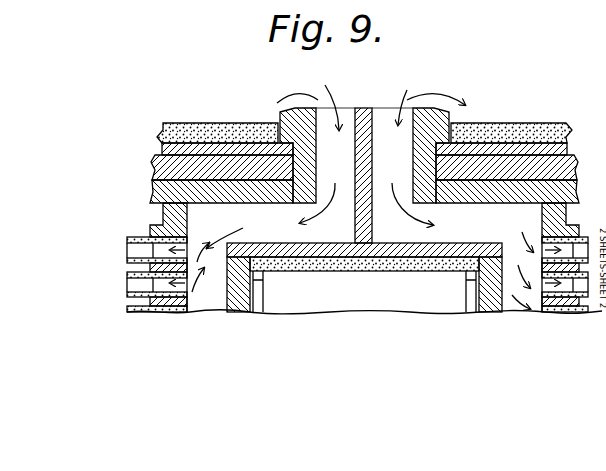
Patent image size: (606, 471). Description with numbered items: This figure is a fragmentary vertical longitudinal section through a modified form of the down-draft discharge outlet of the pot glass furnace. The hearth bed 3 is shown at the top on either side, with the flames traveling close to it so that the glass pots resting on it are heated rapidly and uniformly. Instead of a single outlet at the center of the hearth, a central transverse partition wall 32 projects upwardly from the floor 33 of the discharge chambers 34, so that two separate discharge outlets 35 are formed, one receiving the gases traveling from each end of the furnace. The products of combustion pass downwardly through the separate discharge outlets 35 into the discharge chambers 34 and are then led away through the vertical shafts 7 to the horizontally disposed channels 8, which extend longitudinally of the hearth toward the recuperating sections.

The bed of the hearth 3 is at (182, 130).
The vertical shafts 7 is at (362, 270).
The horizontally disposed channels 8 is at (132, 290).
The central transverse partition wall 32 is at (364, 108).
The floor of the discharge chambers 33 is at (337, 252).
The discharge chambers 34 is at (320, 215).
The separate discharge outlets 35 is at (371, 96).